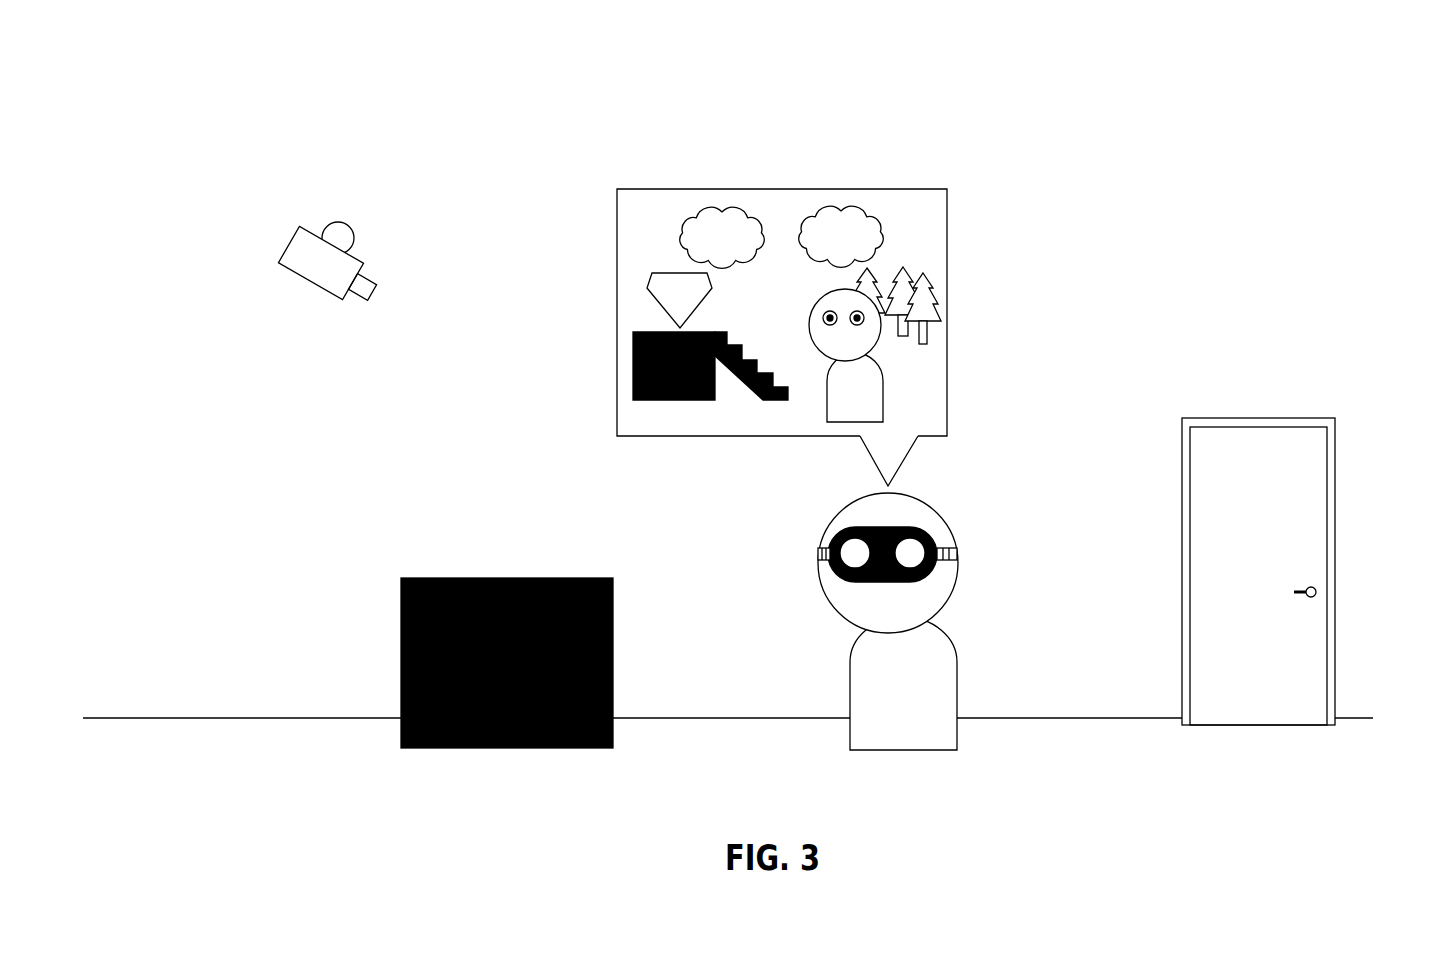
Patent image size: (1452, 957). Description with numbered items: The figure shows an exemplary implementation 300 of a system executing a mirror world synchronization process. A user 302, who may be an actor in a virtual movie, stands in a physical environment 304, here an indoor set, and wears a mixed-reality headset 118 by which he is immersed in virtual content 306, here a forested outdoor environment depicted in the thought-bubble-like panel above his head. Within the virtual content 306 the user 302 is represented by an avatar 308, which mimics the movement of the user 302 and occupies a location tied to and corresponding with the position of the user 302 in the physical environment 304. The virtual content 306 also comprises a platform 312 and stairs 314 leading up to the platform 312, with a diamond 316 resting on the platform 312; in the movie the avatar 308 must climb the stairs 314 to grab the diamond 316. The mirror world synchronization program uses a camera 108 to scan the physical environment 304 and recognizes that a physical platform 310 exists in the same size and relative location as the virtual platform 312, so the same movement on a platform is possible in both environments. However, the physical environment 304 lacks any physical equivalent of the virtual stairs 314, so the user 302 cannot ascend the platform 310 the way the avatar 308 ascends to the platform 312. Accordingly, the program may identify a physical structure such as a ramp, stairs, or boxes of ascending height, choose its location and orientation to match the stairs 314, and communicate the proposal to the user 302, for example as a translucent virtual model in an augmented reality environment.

The exemplary implementation 300 is at (352, 100).
The camera 108 is at (330, 277).
The user 302 is at (957, 657).
The physical environment 304 is at (728, 776).
The virtual content 306 is at (792, 436).
The avatar 308 is at (883, 386).
The platform 310 is at (497, 578).
The platform 312 is at (635, 370).
The stairs 314 is at (747, 385).
The diamond 316 is at (695, 303).
The mixed-reality headset 118 is at (955, 555).